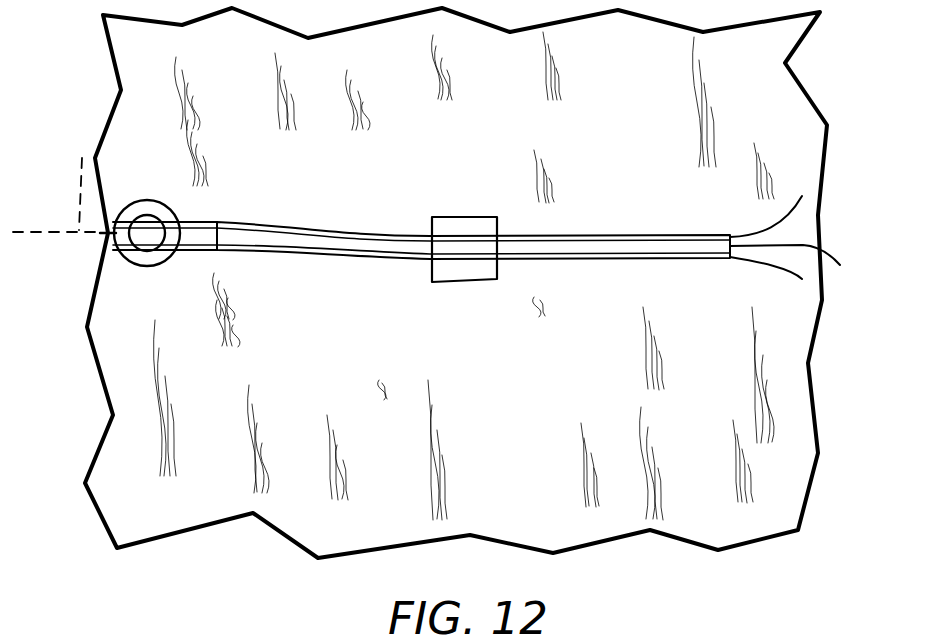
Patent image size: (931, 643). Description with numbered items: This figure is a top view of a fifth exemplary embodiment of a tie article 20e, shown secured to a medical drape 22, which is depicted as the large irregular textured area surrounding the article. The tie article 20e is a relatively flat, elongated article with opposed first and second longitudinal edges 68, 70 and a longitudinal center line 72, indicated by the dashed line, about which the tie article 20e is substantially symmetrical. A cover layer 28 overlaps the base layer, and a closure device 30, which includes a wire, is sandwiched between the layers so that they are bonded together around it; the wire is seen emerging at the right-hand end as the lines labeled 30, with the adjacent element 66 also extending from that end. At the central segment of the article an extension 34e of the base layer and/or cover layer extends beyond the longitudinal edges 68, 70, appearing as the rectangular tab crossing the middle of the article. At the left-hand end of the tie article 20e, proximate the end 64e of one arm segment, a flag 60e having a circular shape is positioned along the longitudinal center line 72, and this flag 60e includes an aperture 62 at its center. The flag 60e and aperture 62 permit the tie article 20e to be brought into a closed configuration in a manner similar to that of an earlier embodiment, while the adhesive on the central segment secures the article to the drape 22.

The tie article 20e is at (436, 227).
The medical drape 22 is at (512, 445).
The cover layer 28 is at (657, 250).
The closure device 30 is at (772, 239).
The extension 34e is at (450, 228).
The flag 60e is at (138, 207).
The aperture 62 is at (157, 229).
The end 64e is at (110, 235).
The conductor 66 is at (795, 268).
The first longitudinal edge 68 is at (313, 230).
The second longitudinal edge 70 is at (288, 255).
The longitudinal center line 72 is at (56, 182).